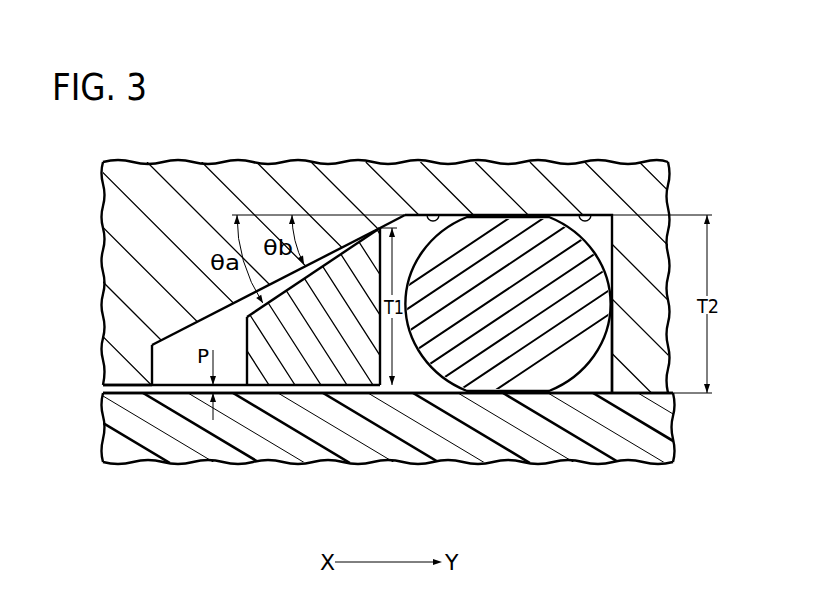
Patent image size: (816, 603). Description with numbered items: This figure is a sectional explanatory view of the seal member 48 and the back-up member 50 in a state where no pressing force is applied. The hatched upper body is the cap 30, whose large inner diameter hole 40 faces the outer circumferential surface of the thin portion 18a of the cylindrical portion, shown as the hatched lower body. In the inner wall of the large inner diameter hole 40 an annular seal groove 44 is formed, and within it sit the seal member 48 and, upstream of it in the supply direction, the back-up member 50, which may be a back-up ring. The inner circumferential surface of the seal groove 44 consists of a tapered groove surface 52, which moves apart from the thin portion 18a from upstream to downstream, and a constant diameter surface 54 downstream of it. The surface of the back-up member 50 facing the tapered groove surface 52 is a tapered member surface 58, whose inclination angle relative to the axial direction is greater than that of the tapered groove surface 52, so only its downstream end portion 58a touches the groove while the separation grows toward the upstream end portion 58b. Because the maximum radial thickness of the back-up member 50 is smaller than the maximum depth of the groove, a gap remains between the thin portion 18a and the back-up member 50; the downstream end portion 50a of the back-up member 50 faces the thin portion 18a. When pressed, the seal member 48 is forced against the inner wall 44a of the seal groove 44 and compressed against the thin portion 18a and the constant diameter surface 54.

The cap 30 is at (647, 188).
The large inner diameter hole 40 is at (145, 384).
The tapered groove surface 52 is at (167, 341).
The end portion of the tapered member surface on the upstream side 58b is at (247, 317).
The seal groove 44 is at (584, 216).
The inner wall of the seal groove 44a is at (607, 378).
The constant diameter surface 54 is at (425, 213).
The end portion of the tapered member surface on the downstream side 58a is at (381, 227).
The back-up member 50 is at (282, 368).
The tapered member surface 58 is at (319, 268).
The end portion of the back-up member on the downstream side 50a is at (382, 393).
The seal member 48 is at (507, 240).
The thin portion 18a is at (490, 448).